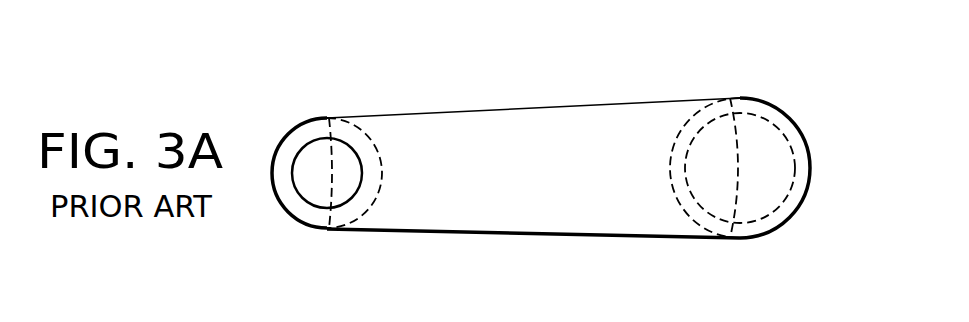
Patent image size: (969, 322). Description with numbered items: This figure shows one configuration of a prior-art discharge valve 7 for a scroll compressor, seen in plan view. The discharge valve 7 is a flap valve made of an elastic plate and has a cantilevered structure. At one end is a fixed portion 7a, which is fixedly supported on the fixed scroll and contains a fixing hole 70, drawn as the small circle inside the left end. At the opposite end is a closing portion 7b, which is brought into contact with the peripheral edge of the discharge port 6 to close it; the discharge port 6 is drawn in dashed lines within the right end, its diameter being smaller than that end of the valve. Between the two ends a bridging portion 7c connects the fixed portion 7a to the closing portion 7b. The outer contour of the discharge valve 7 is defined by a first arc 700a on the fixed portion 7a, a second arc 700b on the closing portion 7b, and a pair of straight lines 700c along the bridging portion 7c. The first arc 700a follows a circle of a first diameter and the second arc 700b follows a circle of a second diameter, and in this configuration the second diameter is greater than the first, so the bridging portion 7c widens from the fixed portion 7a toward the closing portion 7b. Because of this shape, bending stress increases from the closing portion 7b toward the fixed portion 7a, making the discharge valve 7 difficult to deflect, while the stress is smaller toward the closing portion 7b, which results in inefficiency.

The discharge valve 7 is at (553, 153).
The fixed portion 7a is at (301, 170).
The closing portion 7b is at (778, 139).
The bridging portion 7c is at (533, 169).
The first arc 700a is at (272, 177).
The second arc 700b is at (809, 170).
The straight lines 700c is at (535, 108).
The fixing hole 70 is at (318, 187).
The discharge port 6 is at (763, 145).